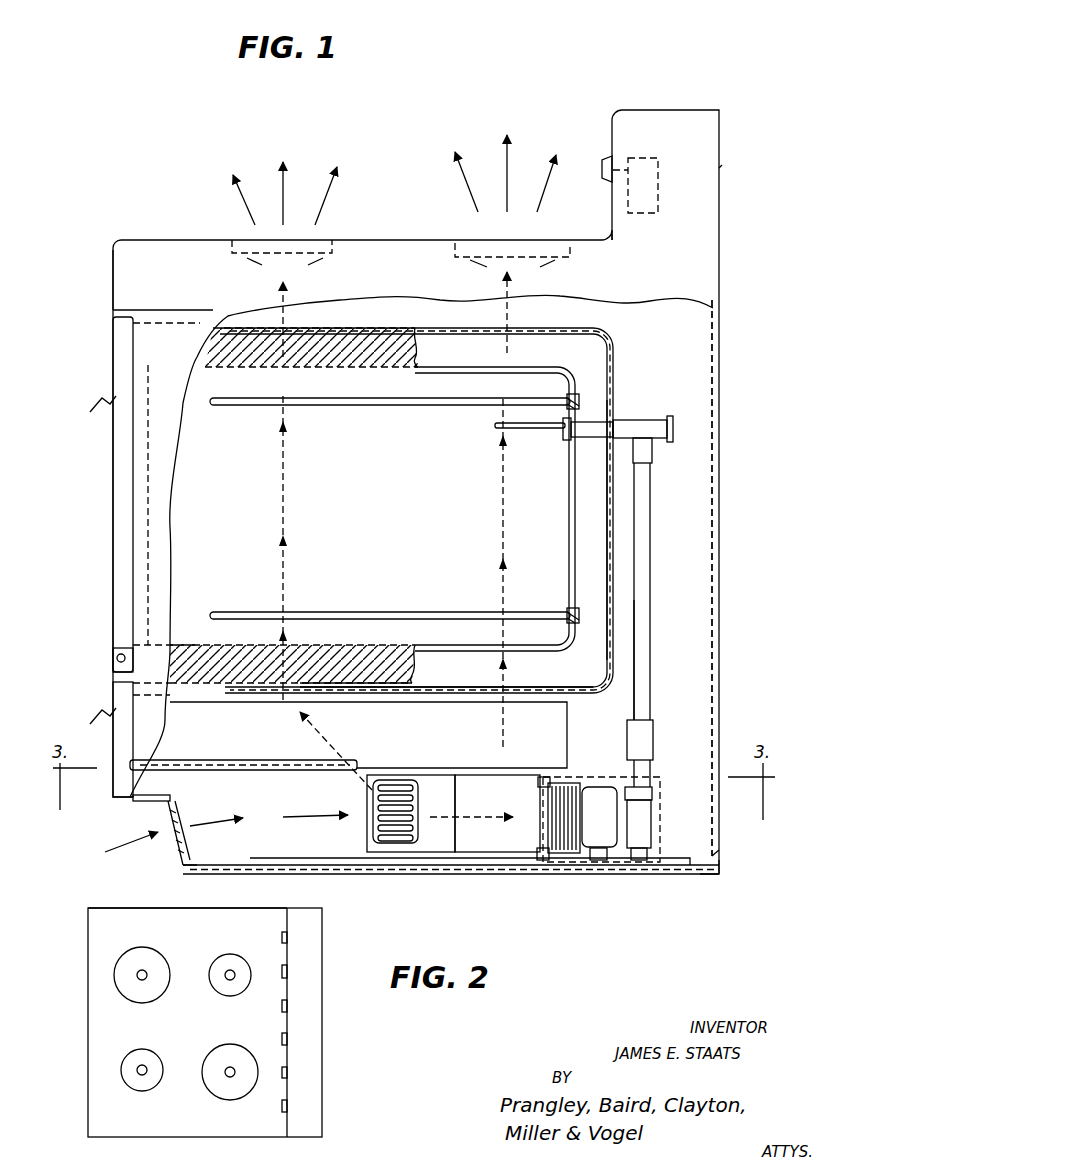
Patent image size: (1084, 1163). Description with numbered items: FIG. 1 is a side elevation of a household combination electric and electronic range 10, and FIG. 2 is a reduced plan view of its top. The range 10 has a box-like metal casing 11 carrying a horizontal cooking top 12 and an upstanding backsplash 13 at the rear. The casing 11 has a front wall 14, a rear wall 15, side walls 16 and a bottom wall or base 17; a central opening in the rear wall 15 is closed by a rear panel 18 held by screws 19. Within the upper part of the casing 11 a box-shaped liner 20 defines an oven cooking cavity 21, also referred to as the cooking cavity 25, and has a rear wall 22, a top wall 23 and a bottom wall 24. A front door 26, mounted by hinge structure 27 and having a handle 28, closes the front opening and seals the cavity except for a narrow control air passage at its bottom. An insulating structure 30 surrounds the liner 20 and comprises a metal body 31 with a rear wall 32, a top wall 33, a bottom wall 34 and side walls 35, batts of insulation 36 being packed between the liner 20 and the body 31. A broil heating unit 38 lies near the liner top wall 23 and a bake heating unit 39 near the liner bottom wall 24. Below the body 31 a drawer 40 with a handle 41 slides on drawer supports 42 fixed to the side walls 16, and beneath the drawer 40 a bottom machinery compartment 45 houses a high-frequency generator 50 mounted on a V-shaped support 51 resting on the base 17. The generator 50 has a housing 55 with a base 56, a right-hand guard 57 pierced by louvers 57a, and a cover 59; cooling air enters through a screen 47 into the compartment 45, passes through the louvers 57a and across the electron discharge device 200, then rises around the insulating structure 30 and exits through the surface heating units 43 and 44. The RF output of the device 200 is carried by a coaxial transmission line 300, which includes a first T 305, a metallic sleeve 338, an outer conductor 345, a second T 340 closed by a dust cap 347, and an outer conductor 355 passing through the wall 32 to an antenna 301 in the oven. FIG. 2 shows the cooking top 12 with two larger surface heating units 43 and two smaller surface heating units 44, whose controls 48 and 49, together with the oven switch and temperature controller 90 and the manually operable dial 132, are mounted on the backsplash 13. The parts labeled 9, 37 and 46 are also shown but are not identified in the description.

In FIG. 1, the range 10 is at (405, 452).
In FIG. 2, the range 10 is at (176, 1022).
In FIG. 1, the cooking top 12 is at (383, 240).
In FIG. 2, the cooking top 12 is at (187, 923).
In FIG. 1, the backsplash 13 is at (611, 128).
In FIG. 2, the backsplash 13 is at (305, 930).
In FIG. 1, the control knob 9 is at (601, 163).
In FIG. 1, the rear wall 15 is at (720, 146).
In FIG. 1, the screws 19 is at (722, 168).
In FIG. 1, the rear panel 18 is at (720, 522).
In FIG. 1, the casing 11 is at (686, 268).
In FIG. 1, the side walls 16 is at (645, 311).
In FIG. 1, the front wall 14 is at (111, 277).
In FIG. 1, the smaller surface heating units 44 is at (250, 240).
In FIG. 2, the smaller surface heating units 44 is at (232, 955).
In FIG. 1, the larger surface heating units 43 is at (512, 243).
In FIG. 2, the larger surface heating units 43 is at (116, 972).
In FIG. 1, the top wall 33 is at (533, 330).
In FIG. 1, the rear wall 22 is at (567, 496).
In FIG. 1, the top wall 23 is at (333, 368).
In FIG. 1, the batts of insulation 36 is at (310, 648).
In FIG. 1, the bottom wall 24 is at (382, 650).
In FIG. 1, the broil electric heating unit 38 is at (238, 406).
In FIG. 1, the bake electric heating unit 39 is at (235, 612).
In FIG. 1, the liner 20 is at (462, 378).
In FIG. 1, the antenna 301 is at (500, 432).
In FIG. 1, the outer conductor 355 is at (566, 436).
In FIG. 1, the second T 340 is at (637, 422).
In FIG. 1, the dust cap 347 is at (674, 428).
In FIG. 1, the outer conductor 345 is at (650, 518).
In FIG. 1, the rear space 37 is at (684, 471).
In FIG. 1, the rear wall 32 is at (613, 554).
In FIG. 1, the box-like metal body 31 is at (613, 618).
In FIG. 1, the transmission line 300 is at (652, 668).
In FIG. 1, the front door 26 is at (118, 455).
In FIG. 1, the handle 28 is at (92, 402).
In FIG. 1, the hinge structure 27 is at (112, 660).
In FIG. 1, the oven cooking cavity 21 is at (208, 490).
In FIG. 1, the cooking cavity 25 is at (393, 571).
In FIG. 1, the side walls 35 is at (578, 663).
In FIG. 1, the insulating structure 30 is at (197, 665).
In FIG. 1, the drawer 40 is at (198, 724).
In FIG. 1, the handle 41 is at (92, 718).
In FIG. 1, the drawer supports 42 is at (196, 772).
In FIG. 1, the toe ledge 46 is at (166, 806).
In FIG. 1, the screen 47 is at (172, 836).
In FIG. 1, the bottom wall 34 is at (571, 692).
In FIG. 1, the metallic sleeve 338 is at (652, 748).
In FIG. 1, the first T 305 is at (643, 808).
In FIG. 1, the electron discharge device 200 is at (576, 838).
In FIG. 1, the cover 59 is at (548, 776).
In FIG. 1, the right-hand guard 57 is at (435, 850).
In FIG. 1, the louvers 57a is at (400, 836).
In FIG. 1, the base 56 is at (478, 856).
In FIG. 1, the bottom machinery compartment 45 is at (318, 836).
In FIG. 1, the housing 55 is at (492, 834).
In FIG. 1, the bottom wall 17 is at (564, 868).
In FIG. 1, the V-shaped support 51 is at (667, 866).
In FIG. 1, the high-frequency power generator 50 is at (716, 874).
In FIG. 2, the controls 48 is at (288, 942).
In FIG. 2, the controls 49 is at (283, 1038).
In FIG. 2, the manually operable dial 132 is at (288, 1070).
In FIG. 2, the oven switch and temperature controller 90 is at (288, 1106).